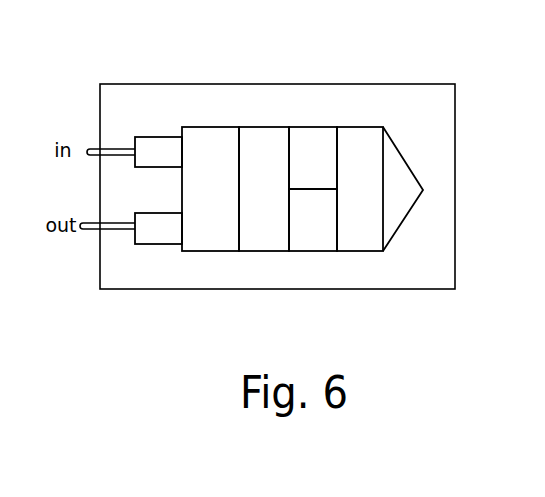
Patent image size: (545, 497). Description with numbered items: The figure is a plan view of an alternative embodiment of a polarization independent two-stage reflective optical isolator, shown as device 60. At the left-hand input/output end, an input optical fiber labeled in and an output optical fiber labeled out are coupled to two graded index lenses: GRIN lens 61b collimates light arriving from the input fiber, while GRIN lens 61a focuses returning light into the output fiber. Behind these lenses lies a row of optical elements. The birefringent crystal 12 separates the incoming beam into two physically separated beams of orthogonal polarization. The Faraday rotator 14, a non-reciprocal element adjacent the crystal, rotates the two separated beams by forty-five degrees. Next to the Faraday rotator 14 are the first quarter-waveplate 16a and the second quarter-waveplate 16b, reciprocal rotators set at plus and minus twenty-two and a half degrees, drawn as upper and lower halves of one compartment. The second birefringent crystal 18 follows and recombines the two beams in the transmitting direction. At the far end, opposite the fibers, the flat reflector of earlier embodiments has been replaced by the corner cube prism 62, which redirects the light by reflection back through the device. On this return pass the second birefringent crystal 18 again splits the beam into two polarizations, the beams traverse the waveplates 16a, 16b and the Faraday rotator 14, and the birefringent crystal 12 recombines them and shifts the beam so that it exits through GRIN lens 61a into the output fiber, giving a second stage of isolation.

The birefringent crystal 12 is at (197, 127).
The Faraday rotator 14 is at (257, 127).
The first quarter-waveplate 16a is at (325, 250).
The second quarter-waveplate 16b is at (312, 127).
The second birefringent crystal 18 is at (367, 251).
The device 60 is at (360, 83).
The GRIN lens 61a is at (175, 245).
The GRIN lens 61b is at (173, 136).
The corner cube prism 62 is at (408, 210).